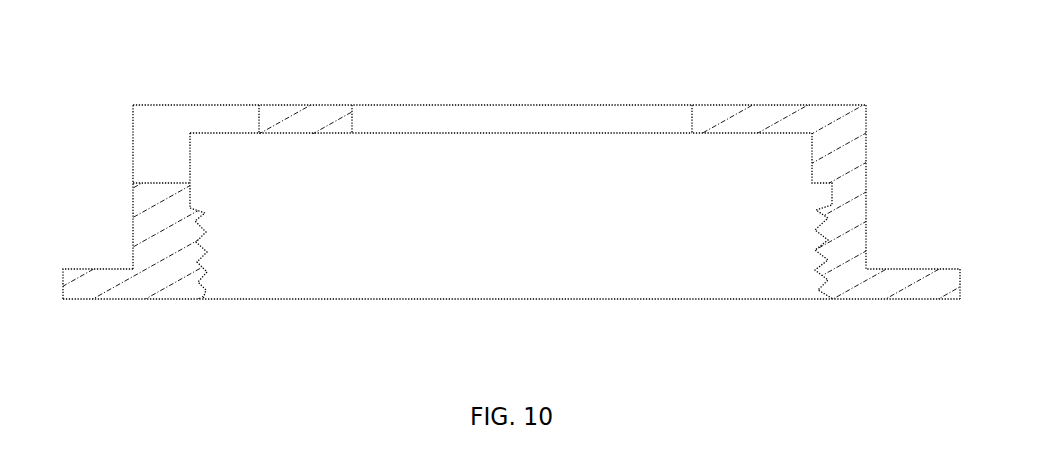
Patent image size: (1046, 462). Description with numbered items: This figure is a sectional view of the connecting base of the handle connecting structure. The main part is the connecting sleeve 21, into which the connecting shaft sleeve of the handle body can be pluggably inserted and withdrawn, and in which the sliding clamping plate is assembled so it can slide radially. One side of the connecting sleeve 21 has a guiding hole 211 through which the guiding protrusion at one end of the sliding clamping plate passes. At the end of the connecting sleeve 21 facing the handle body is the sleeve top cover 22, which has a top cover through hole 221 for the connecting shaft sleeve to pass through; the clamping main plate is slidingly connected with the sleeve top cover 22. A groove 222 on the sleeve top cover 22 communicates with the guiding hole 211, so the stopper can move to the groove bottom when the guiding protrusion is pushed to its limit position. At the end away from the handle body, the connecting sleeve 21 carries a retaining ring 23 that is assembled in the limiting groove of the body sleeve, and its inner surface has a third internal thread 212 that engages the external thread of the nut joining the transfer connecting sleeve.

The connecting sleeve 21 is at (853, 212).
The guiding hole 211 is at (153, 153).
The third internal thread 212 is at (203, 233).
The sleeve top cover 22 is at (733, 120).
The top cover through hole 221 is at (442, 118).
The groove 222 is at (235, 120).
The retaining ring 23 is at (103, 282).